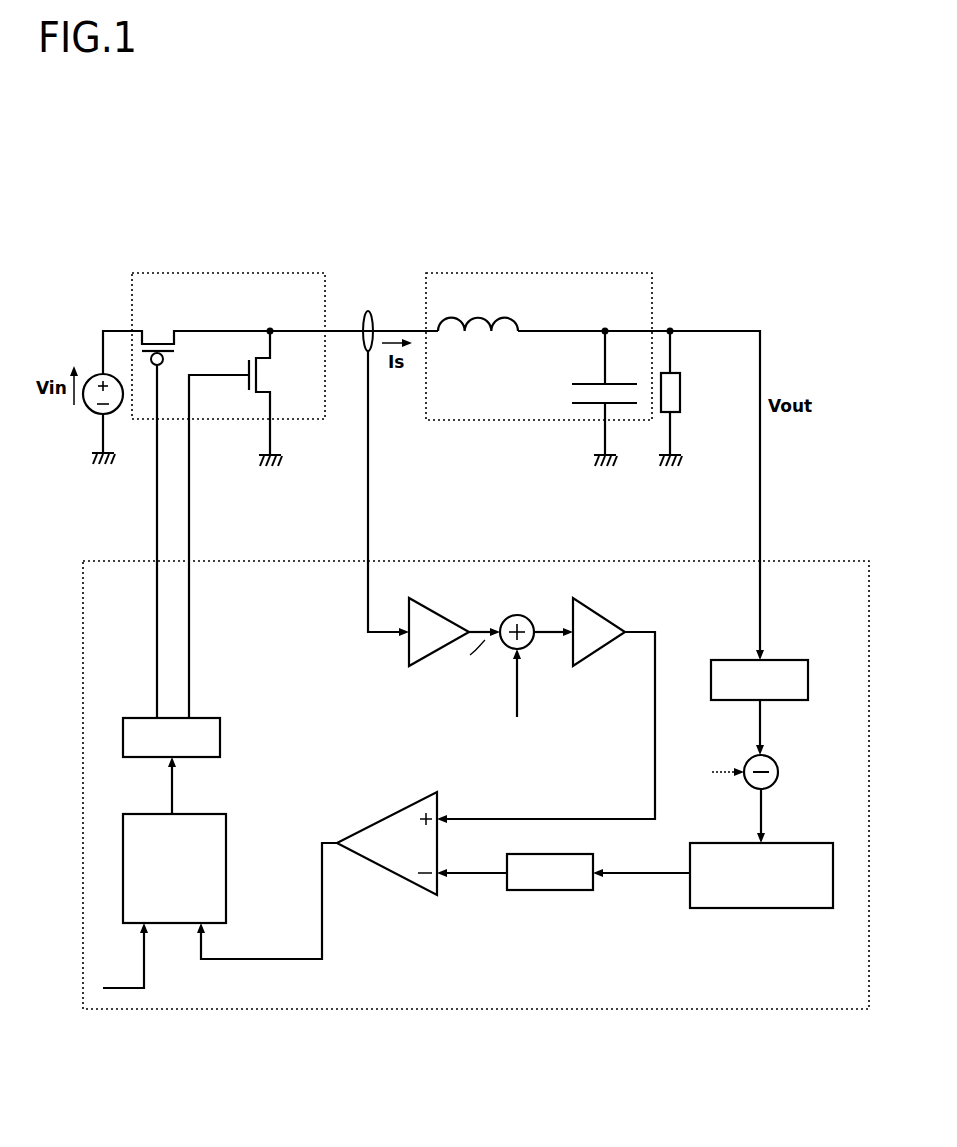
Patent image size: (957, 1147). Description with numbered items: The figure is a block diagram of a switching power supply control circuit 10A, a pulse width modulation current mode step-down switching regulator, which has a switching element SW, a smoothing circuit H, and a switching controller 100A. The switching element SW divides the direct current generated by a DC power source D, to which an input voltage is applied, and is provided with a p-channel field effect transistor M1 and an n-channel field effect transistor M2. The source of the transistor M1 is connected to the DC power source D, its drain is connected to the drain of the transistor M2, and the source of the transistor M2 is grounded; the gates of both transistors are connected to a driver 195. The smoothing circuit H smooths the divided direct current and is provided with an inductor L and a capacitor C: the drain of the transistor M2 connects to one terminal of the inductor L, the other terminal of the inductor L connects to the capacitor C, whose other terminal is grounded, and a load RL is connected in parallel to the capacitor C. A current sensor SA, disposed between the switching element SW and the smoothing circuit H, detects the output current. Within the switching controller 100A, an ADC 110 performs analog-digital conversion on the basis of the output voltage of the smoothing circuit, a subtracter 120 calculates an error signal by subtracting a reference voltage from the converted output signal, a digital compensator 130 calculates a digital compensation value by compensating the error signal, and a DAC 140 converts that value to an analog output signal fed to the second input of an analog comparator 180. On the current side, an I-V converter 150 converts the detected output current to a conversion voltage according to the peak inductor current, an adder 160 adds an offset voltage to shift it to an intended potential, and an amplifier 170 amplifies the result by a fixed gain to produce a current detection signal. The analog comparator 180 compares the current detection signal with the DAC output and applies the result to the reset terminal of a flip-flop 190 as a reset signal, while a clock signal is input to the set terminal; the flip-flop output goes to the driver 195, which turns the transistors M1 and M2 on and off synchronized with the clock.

The switching power supply control circuit 10A is at (495, 164).
The switching controller 100A is at (795, 560).
The ADC 110 is at (770, 658).
The subtracter 120 is at (748, 758).
The digital compensator 130 is at (725, 910).
The DAC 140 is at (548, 892).
The I-V converter 150 is at (460, 623).
The adder 160 is at (525, 616).
The amplifier 170 is at (596, 617).
The analog comparator 180 is at (389, 877).
The flip-flop 190 is at (226, 873).
The driver 195 is at (221, 735).
The switching element SW is at (258, 272).
The smoothing circuit H is at (566, 272).
The current sensor SA is at (382, 461).
The inductor L is at (478, 312).
The capacitor C is at (591, 392).
The load RL is at (686, 392).
The p-channel field effect transistor M1 is at (158, 509).
The n-channel field effect transistor M2 is at (248, 523).
The DC power source D is at (106, 386).